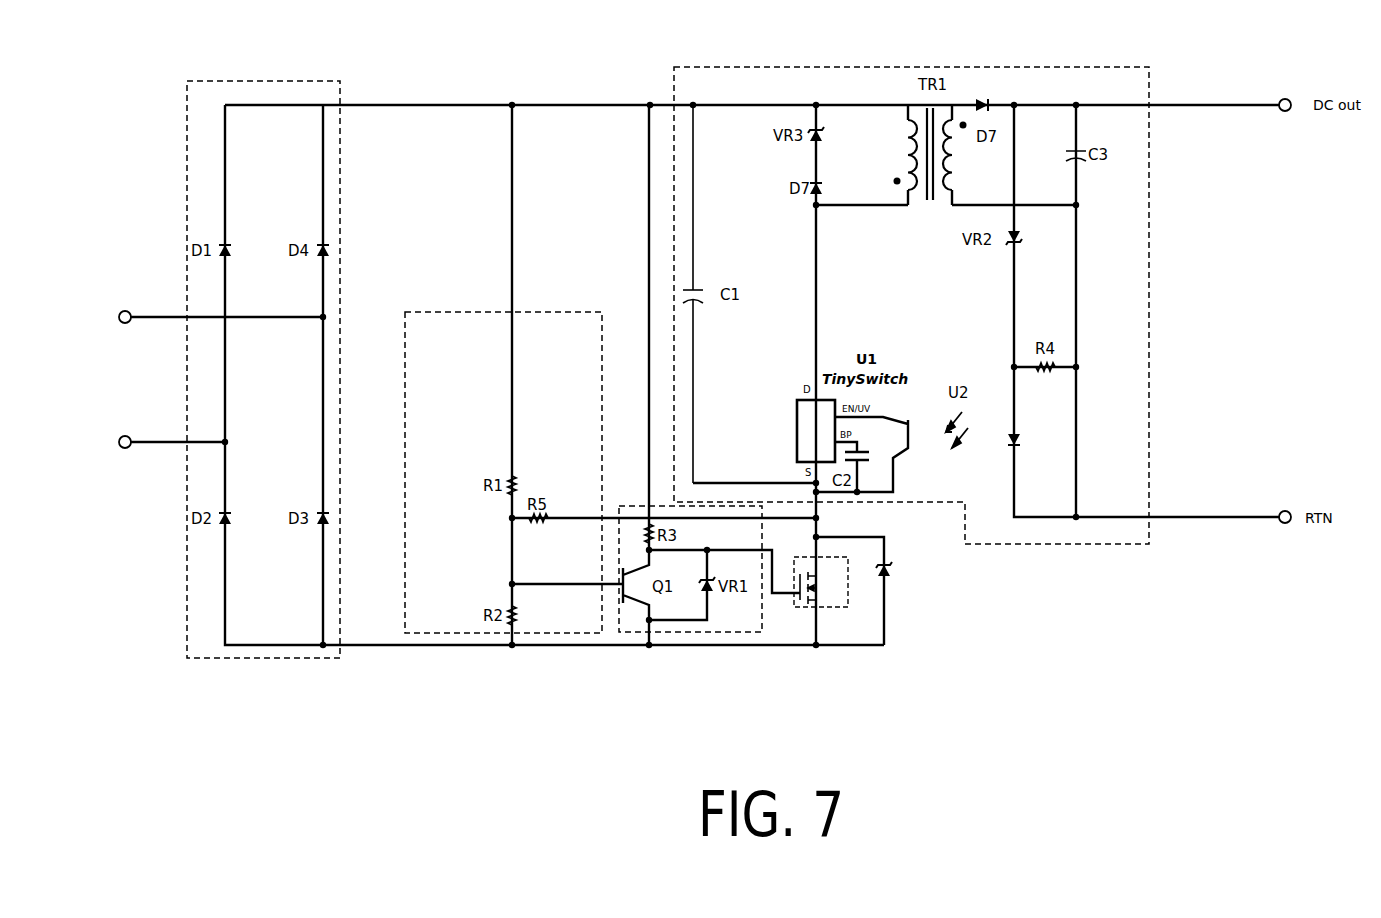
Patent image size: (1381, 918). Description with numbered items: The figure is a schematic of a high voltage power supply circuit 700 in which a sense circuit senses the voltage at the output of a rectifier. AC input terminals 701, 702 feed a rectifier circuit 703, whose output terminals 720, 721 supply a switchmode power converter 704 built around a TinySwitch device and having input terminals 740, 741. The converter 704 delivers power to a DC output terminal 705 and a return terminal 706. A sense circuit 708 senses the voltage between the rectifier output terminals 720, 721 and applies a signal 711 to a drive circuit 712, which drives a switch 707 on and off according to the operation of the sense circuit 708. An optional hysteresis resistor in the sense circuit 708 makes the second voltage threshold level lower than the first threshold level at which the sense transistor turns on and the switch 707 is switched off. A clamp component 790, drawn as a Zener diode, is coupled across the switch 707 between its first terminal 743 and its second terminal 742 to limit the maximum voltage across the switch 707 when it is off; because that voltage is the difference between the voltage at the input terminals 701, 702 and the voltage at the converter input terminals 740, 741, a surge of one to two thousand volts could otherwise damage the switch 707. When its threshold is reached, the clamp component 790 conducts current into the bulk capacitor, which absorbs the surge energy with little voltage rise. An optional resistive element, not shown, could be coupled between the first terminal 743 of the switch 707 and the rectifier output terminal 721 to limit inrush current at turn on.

The power supply circuit 700 is at (341, 29).
The AC input terminal 701 is at (118, 313).
The AC input terminal 702 is at (118, 440).
The rectifier circuit 703 is at (185, 545).
The switchmode power converter 704 is at (730, 65).
The DC output terminal 705 is at (1295, 113).
The return terminal 706 is at (1295, 525).
The switch 707 is at (850, 577).
The sense circuit 708 is at (420, 310).
The signal 711 is at (614, 596).
The drive circuit 712 is at (772, 632).
The output terminal 720 is at (352, 107).
The output terminal 721 is at (355, 648).
The input terminal 740 is at (665, 102).
The input terminal 741 is at (820, 505).
The source connection 742 is at (820, 545).
The first terminal 743 is at (825, 612).
The clamp component 790 is at (893, 568).